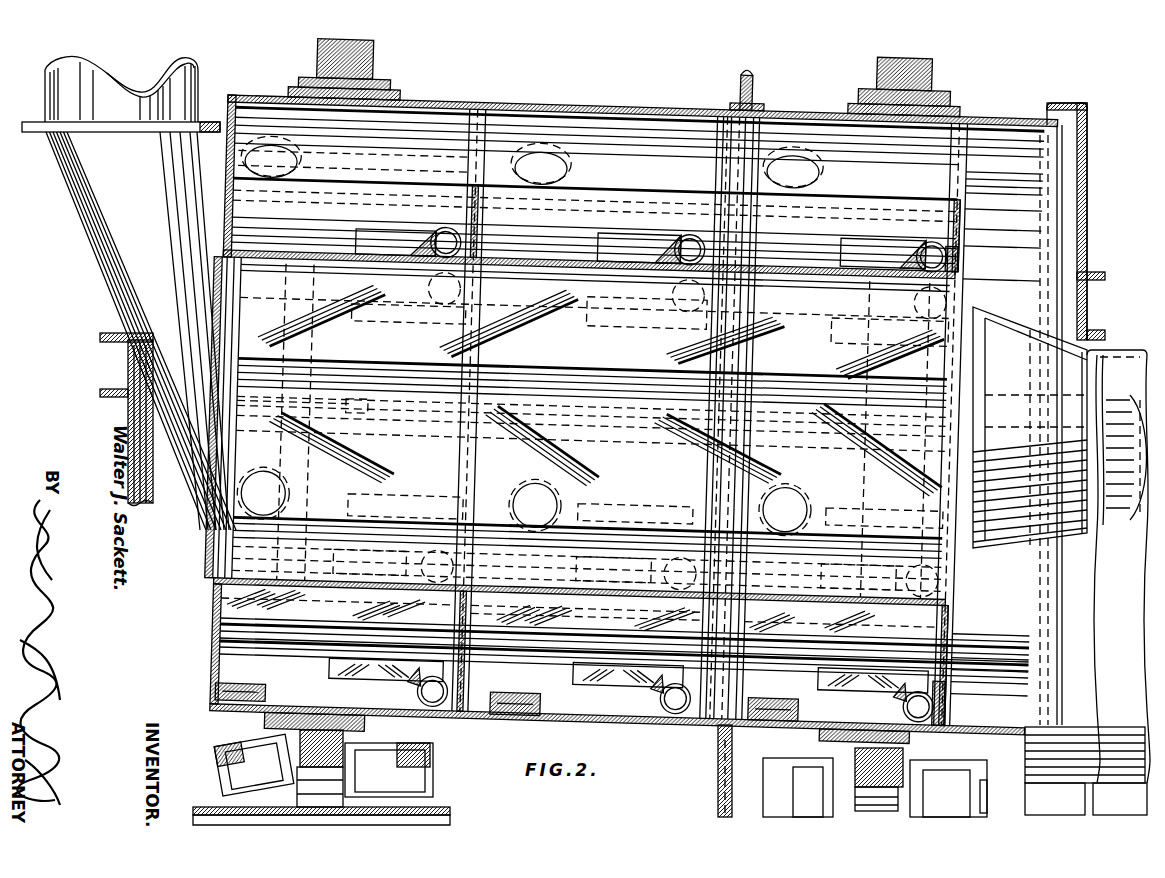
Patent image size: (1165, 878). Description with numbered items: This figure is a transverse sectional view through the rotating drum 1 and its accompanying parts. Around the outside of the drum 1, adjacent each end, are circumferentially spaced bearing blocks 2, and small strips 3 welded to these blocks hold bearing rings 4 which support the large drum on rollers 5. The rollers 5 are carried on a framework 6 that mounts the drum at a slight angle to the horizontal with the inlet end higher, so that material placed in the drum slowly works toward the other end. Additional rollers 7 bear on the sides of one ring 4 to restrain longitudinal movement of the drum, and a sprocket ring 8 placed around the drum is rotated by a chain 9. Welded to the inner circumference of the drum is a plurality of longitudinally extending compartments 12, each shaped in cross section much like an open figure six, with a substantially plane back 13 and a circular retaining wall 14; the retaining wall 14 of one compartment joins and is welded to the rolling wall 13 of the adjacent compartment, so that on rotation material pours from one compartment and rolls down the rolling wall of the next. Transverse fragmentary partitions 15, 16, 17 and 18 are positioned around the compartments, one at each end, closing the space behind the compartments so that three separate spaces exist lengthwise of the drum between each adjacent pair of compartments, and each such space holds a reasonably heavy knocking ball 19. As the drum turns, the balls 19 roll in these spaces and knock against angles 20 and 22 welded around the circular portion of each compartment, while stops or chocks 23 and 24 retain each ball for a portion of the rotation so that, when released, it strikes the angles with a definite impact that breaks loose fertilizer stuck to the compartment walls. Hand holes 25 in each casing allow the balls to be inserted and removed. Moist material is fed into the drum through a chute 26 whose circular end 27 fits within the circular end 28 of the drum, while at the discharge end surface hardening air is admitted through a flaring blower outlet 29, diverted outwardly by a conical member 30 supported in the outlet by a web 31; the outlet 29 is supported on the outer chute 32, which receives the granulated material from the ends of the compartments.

The drum 1 is at (462, 95).
The bearing blocks 2 is at (392, 86).
The small strips 3 is at (385, 75).
The bearing rings 4 is at (316, 56).
The rollers 5 is at (840, 810).
The framework 6 is at (430, 808).
The additional rollers 7 is at (222, 738).
The sprocket ring 8 is at (740, 82).
The chain 9 is at (733, 770).
The compartments 12 is at (601, 108).
The plane back 13 is at (505, 160).
The retaining wall 14 is at (496, 520).
The transverse fragmentary partition 15 is at (330, 191).
The transverse fragmentary partition 16 is at (610, 196).
The transverse fragmentary partition 17 is at (740, 196).
The transverse fragmentary partition 18 is at (965, 235).
The knocking ball 19 is at (445, 250).
The angle 20 is at (425, 358).
The angle 22 is at (360, 258).
The stop 23 is at (395, 258).
The stop 24 is at (372, 560).
The hand holes 25 is at (572, 162).
The chute 26 is at (129, 294).
The circular end 27 is at (212, 438).
The circular end 28 is at (226, 556).
The flaring blower outlet 29 is at (990, 318).
The conical member 30 is at (990, 404).
The web 31 is at (1036, 389).
The outer chute 32 is at (1118, 582).